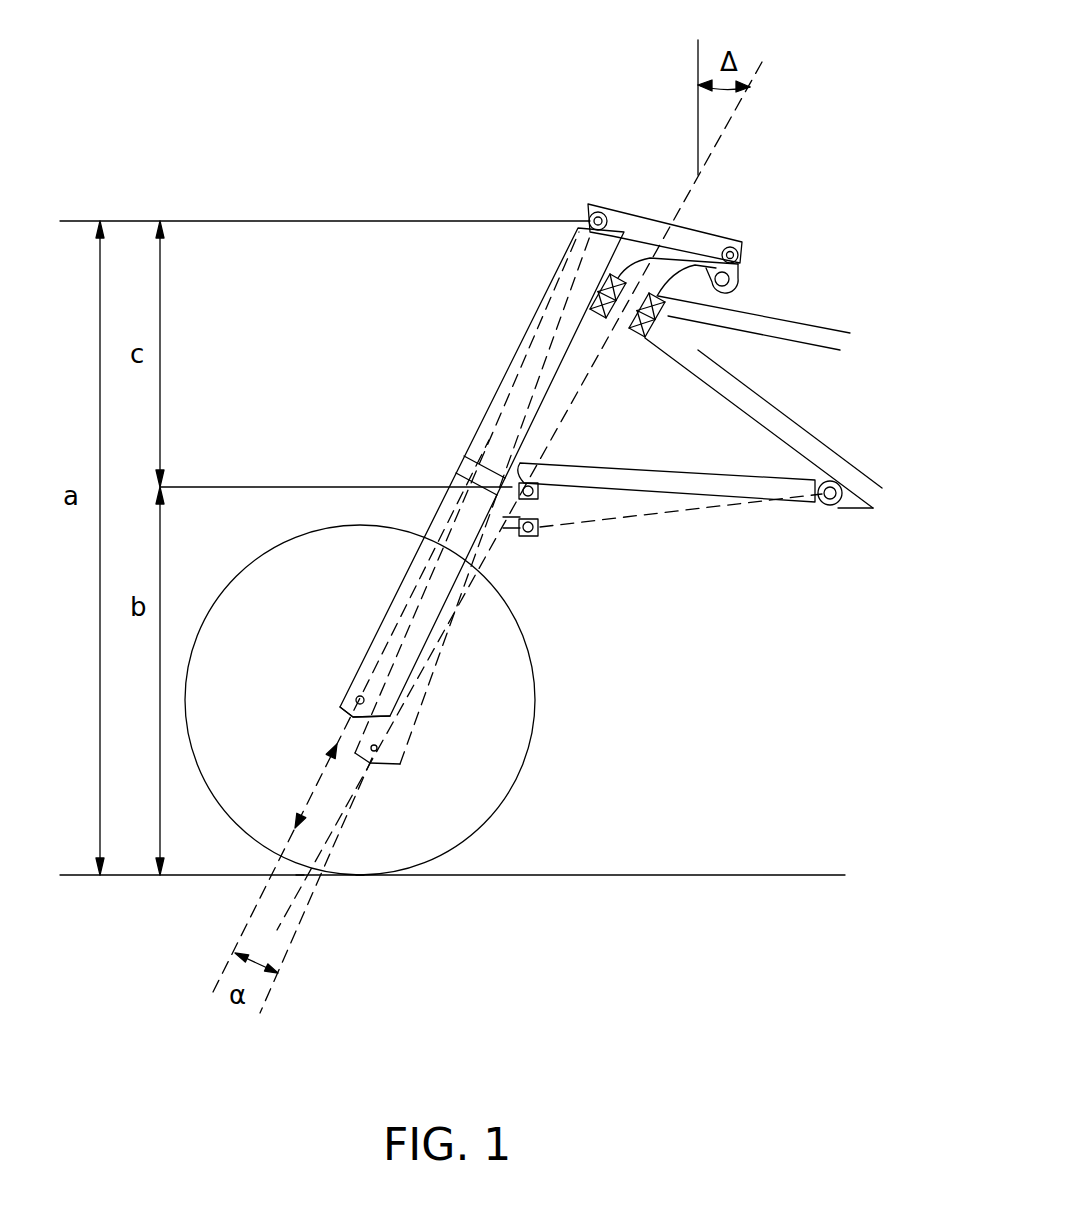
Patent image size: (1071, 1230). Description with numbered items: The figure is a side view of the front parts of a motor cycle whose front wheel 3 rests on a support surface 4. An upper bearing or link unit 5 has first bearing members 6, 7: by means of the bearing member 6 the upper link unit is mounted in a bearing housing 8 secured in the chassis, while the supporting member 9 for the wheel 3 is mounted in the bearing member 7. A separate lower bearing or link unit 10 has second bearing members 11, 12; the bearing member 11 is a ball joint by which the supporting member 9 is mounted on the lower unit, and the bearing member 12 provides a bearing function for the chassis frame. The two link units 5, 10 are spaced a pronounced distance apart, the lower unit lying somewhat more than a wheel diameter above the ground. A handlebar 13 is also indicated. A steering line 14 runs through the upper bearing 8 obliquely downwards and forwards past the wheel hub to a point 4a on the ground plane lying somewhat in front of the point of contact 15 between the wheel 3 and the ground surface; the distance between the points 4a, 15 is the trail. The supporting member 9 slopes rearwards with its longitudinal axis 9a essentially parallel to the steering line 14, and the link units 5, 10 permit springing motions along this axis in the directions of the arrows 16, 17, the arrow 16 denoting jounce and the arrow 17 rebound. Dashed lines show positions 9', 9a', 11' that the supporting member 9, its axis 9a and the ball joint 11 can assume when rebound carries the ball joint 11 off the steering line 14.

The front wheel 3 is at (500, 805).
The support surface 4 is at (668, 873).
The point on the ground plane 4a is at (300, 877).
The upper bearing or link unit 5 is at (578, 224).
The first bearing member 6 is at (697, 257).
The first bearing member 7 is at (596, 211).
The bearing housing 8 is at (598, 290).
The supporting member 9 is at (482, 472).
The longitudinal axis of the supporting member 9a is at (338, 659).
The position of the supporting member 9' is at (472, 498).
The position of the longitudinal axis 9a' is at (353, 879).
The lower bearing or link unit 10 is at (678, 473).
The ball joint 11 is at (552, 499).
The position of the ball joint 11' is at (546, 546).
The second bearing member 12 is at (830, 506).
The handlebar 13 is at (742, 280).
The steering line 14 is at (567, 416).
The point of contact 15 is at (363, 877).
The arrow 16 is at (351, 716).
The arrow 17 is at (285, 809).